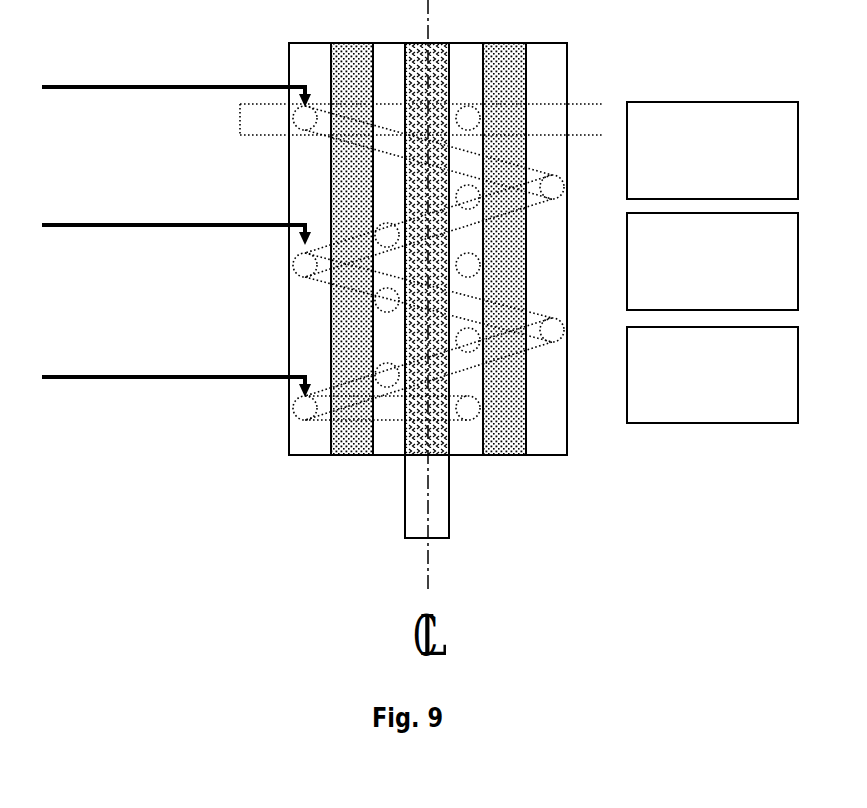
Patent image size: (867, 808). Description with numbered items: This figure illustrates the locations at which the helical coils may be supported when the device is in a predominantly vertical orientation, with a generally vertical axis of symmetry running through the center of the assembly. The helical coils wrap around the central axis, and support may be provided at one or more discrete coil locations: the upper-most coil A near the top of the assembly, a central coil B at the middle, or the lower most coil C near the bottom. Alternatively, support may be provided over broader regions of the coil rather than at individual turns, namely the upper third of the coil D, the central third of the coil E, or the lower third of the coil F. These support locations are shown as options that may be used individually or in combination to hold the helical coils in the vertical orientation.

The upper-most coil A is at (176, 75).
The central coil B is at (176, 211).
The lower most coil C is at (176, 363).
The upper third of the coil D is at (712, 150).
The central third of the coil E is at (712, 261).
The lower third of the coil F is at (712, 375).